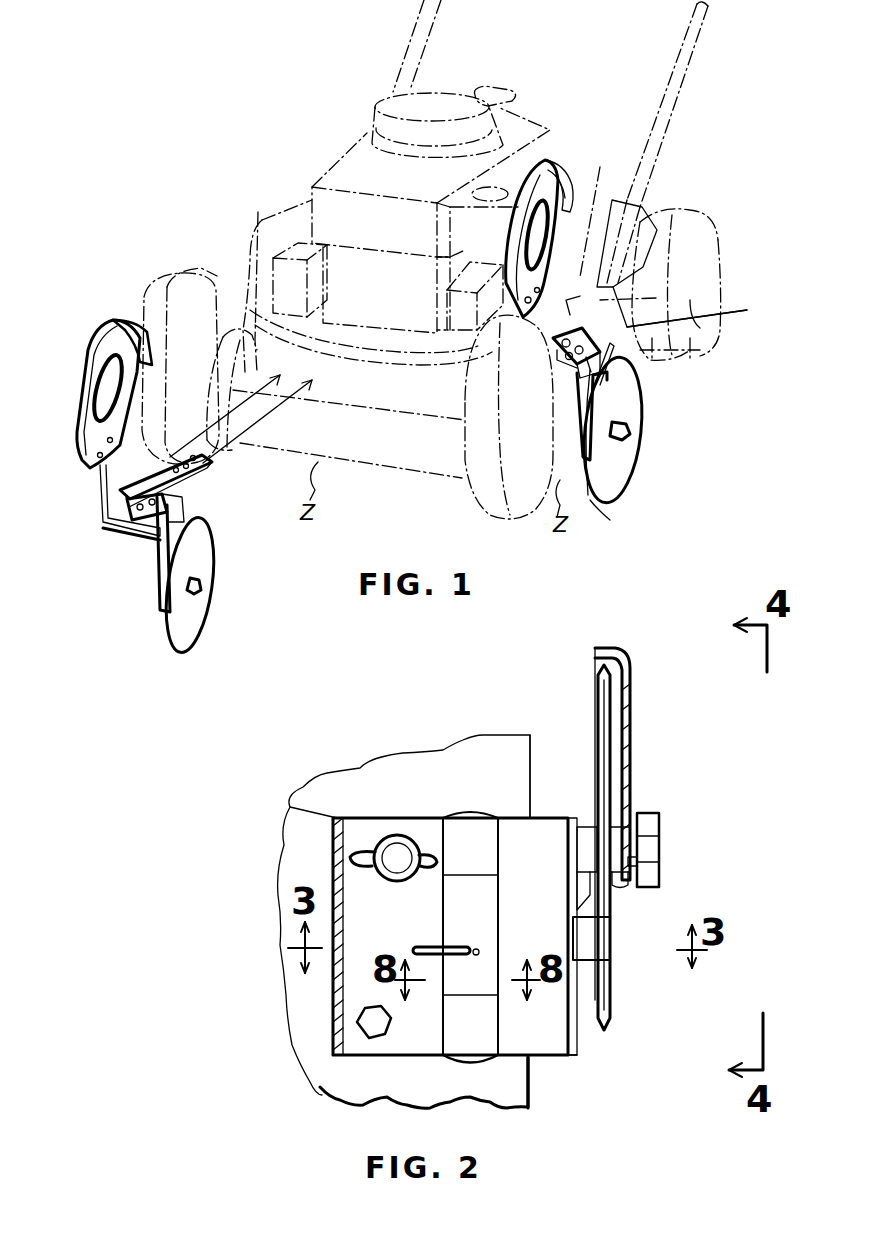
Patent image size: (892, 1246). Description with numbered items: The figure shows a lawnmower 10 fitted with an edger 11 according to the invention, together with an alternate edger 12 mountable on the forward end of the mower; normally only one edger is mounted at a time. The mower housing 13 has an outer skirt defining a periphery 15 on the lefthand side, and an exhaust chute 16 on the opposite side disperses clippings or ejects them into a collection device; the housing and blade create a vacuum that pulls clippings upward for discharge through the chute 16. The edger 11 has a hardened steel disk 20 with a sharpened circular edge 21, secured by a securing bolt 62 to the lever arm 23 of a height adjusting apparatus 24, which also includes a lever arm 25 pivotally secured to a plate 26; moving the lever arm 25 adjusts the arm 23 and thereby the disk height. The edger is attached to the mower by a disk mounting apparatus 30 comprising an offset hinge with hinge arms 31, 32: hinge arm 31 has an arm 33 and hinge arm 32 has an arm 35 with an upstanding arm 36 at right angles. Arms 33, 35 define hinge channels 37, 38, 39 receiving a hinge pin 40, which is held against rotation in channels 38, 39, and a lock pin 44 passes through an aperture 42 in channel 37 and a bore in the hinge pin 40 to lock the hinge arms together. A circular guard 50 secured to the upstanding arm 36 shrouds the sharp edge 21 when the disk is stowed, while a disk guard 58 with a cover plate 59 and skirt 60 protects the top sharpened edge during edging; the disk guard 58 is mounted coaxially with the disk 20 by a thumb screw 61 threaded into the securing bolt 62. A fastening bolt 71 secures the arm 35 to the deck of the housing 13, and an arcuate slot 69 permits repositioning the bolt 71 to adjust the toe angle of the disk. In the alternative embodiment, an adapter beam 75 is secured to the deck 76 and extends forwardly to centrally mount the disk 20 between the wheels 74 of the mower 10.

In FIG. 1, the lawnmower 10 is at (290, 144).
In FIG. 1, the edger 11 is at (633, 435).
In FIG. 2, the edger 11 is at (702, 858).
In FIG. 1, the alternate edger 12 is at (162, 505).
In FIG. 1, the housing 13 is at (672, 239).
In FIG. 2, the housing 13 is at (296, 820).
In FIG. 1, the periphery 15 is at (710, 315).
In FIG. 2, the periphery 15 is at (530, 1105).
In FIG. 1, the exhaust chute 16 is at (262, 215).
In FIG. 1, the disk 20 is at (618, 470).
In FIG. 2, the disk 20 is at (612, 745).
In FIG. 1, the sharpened circular edge 21 is at (600, 500).
In FIG. 2, the sharpened circular edge 21 is at (606, 1028).
In FIG. 2, the lever arm 23 is at (595, 830).
In FIG. 2, the height adjusting apparatus 24 is at (586, 985).
In FIG. 1, the lever arm 25 is at (700, 350).
In FIG. 2, the lever arm 25 is at (610, 935).
In FIG. 2, the plate 26 is at (578, 1035).
In FIG. 1, the disk mounting apparatus 30 is at (540, 370).
In FIG. 2, the disk mounting apparatus 30 is at (480, 750).
In FIG. 1, the hinge arm 31 is at (577, 393).
In FIG. 2, the hinge arm 31 is at (520, 835).
In FIG. 1, the hinge arm 32 is at (570, 302).
In FIG. 2, the hinge arm 32 is at (330, 985).
In FIG. 2, the arm 33 is at (546, 902).
In FIG. 2, the arm 35 is at (396, 932).
In FIG. 2, the arm 36 is at (332, 1023).
In FIG. 2, the hinge channel 37 is at (488, 924).
In FIG. 2, the hinge channel 38 is at (458, 1040).
In FIG. 2, the hinge channel 39 is at (462, 826).
In FIG. 2, the hinge pin 40 is at (465, 1062).
In FIG. 2, the aperture 42 is at (480, 950).
In FIG. 2, the lock pin 44 is at (470, 945).
In FIG. 1, the circular guard 50 is at (553, 158).
In FIG. 1, the disk guard 58 is at (640, 407).
In FIG. 2, the disk guard 58 is at (635, 700).
In FIG. 2, the cover plate 59 is at (630, 795).
In FIG. 2, the skirt 60 is at (595, 652).
In FIG. 1, the thumb screw 61 is at (630, 430).
In FIG. 2, the thumb screw 61 is at (660, 823).
In FIG. 2, the securing bolt 62 is at (620, 885).
In FIG. 2, the arcuate slot 69 is at (358, 850).
In FIG. 2, the fastening bolt 71 is at (397, 855).
In FIG. 1, the wheels 74 is at (180, 275).
In FIG. 1, the adapter beam 75 is at (195, 478).
In FIG. 1, the deck 76 is at (312, 385).